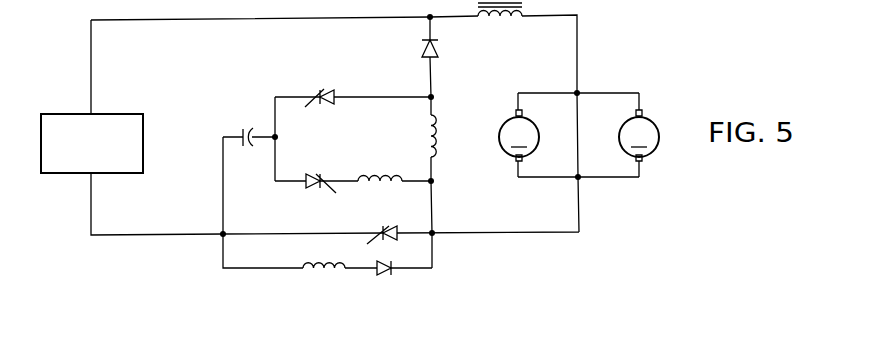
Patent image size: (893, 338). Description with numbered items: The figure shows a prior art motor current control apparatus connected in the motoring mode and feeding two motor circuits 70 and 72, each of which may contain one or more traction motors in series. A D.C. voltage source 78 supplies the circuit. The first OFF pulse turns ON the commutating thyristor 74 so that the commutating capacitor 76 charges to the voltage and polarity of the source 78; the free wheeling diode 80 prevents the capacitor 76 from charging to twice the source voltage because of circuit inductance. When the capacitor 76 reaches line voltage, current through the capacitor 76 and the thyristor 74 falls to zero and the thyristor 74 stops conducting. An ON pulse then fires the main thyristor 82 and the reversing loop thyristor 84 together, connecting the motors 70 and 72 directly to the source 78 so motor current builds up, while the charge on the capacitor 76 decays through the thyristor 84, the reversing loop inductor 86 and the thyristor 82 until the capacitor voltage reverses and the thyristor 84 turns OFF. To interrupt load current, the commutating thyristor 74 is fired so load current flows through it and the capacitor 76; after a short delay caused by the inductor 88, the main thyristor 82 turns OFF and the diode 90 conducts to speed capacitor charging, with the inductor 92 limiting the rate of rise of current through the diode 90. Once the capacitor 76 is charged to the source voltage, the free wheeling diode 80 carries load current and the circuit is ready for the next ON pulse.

The motor circuit 70 is at (620, 131).
The motor circuit 72 is at (500, 131).
The commutating thyristor 74 is at (327, 88).
The commutating capacitor 76 is at (248, 128).
The voltage source 78 is at (62, 112).
The free wheeling diode 80 is at (420, 49).
The main thyristor 82 is at (386, 226).
The reversing loop thyristor 84 is at (318, 173).
The reversing loop inductor 86 is at (365, 184).
The inductor 88 is at (430, 132).
The diode 90 is at (391, 275).
The inductor 92 is at (316, 271).